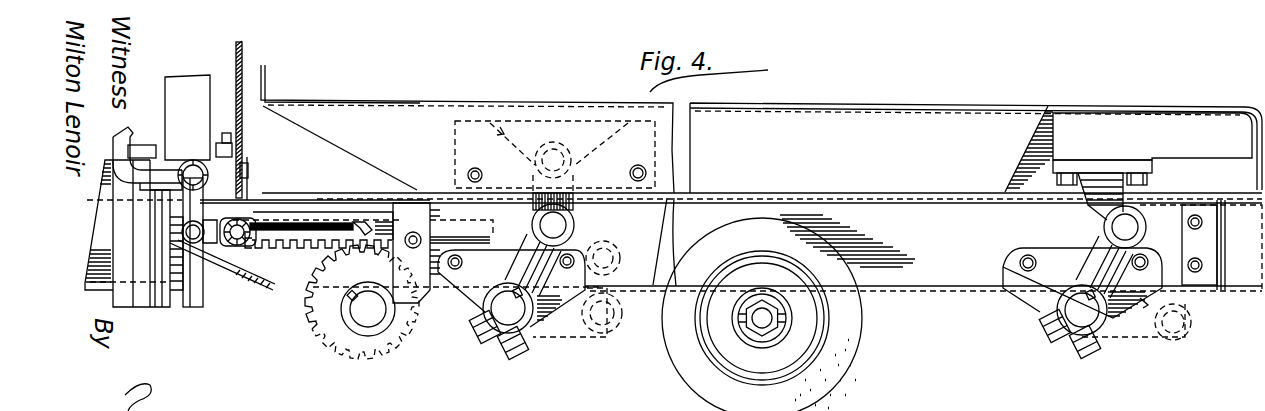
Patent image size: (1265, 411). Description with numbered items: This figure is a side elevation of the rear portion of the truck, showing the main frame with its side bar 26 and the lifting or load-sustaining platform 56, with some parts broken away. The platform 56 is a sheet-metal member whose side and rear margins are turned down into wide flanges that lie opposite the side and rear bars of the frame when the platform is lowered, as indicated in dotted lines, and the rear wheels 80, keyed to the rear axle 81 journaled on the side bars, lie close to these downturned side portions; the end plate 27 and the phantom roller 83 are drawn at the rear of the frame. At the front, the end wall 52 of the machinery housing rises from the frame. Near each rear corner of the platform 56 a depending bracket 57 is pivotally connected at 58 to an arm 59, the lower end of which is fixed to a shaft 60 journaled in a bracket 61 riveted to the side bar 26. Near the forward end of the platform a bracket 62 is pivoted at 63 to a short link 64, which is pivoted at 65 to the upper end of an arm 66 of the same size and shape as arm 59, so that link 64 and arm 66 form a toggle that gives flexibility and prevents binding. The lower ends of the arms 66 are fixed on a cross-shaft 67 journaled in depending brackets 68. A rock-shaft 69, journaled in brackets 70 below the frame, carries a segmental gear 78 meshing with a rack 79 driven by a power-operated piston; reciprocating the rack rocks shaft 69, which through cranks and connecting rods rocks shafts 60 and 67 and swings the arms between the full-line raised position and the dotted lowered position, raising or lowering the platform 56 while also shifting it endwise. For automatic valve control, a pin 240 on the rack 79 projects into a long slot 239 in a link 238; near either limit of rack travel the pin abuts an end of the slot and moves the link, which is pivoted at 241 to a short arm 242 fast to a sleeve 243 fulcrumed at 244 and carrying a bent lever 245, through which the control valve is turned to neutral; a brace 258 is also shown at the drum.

The side bar 26 is at (980, 286).
The rear end plate 27 is at (1223, 288).
The end wall 52 is at (242, 48).
The lifting platform 56 is at (852, 82).
The bracket 57 is at (1103, 147).
The pivot 58 is at (1118, 223).
The arm 59 is at (1100, 257).
The shaft 60 is at (1073, 303).
The bracket 61 is at (1022, 295).
The bracket 62 is at (503, 138).
The pivot 63 is at (585, 151).
The link 64 is at (533, 212).
The pivot 65 is at (557, 223).
The arm 66 is at (540, 328).
The cross-shaft 67 is at (505, 311).
The bracket 68 is at (453, 298).
The rock-shaft 69 is at (368, 322).
The bracket 70 is at (421, 215).
The segmental gear 78 is at (305, 312).
The rack 79 is at (287, 250).
The wheel 80 is at (855, 358).
The rear axle 81 is at (775, 323).
The roller 83 is at (591, 321).
The link 238 is at (350, 222).
The slot 239 is at (288, 228).
The pin 240 is at (248, 225).
The pivot 241 is at (193, 244).
The short arm 242 is at (185, 205).
The sleeve 243 is at (192, 164).
The fulcrum 244 is at (207, 172).
The bent lever 245 is at (133, 133).
The brace 258 is at (187, 253).